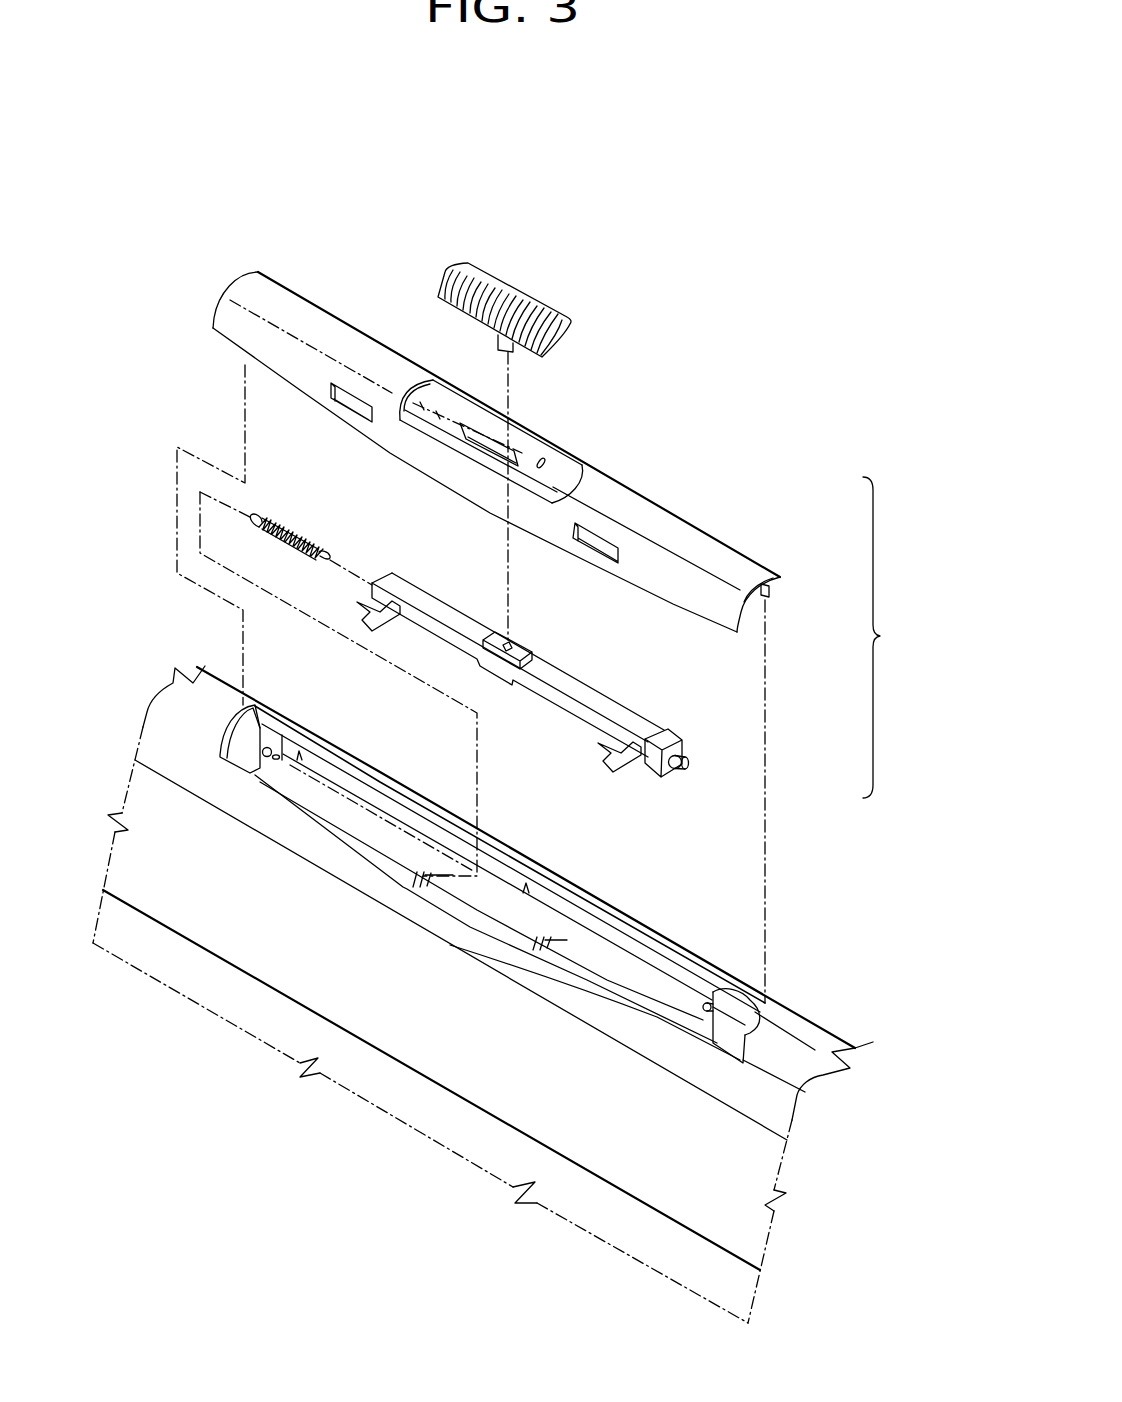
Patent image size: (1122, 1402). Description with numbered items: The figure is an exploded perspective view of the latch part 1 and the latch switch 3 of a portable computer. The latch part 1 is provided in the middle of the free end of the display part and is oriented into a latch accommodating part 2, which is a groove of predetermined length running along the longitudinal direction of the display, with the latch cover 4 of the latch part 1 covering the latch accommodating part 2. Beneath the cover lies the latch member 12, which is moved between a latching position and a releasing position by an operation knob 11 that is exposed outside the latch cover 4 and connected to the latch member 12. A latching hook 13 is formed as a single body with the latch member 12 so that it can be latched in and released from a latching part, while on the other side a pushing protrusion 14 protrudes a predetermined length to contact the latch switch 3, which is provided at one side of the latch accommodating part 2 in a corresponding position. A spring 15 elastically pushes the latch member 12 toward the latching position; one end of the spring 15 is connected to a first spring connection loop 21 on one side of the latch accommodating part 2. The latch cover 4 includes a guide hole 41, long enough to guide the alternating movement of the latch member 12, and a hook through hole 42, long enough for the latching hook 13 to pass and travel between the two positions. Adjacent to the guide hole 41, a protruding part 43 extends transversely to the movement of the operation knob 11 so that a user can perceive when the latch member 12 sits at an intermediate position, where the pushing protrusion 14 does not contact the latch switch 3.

The latch part 1 is at (897, 654).
The latch accommodating part 2 is at (598, 943).
The latch switch 3 is at (713, 990).
The latch cover 4 is at (458, 490).
The operation knob 11 is at (570, 325).
The latch member 12 is at (605, 695).
The latching hook 13 is at (680, 740).
The pushing protrusion 14 is at (689, 766).
The spring 15 is at (295, 532).
The first spring connection loop 21 is at (275, 742).
The guide hole 41 is at (518, 442).
The hook through hole 42 is at (595, 553).
The protruding part 43 is at (555, 452).